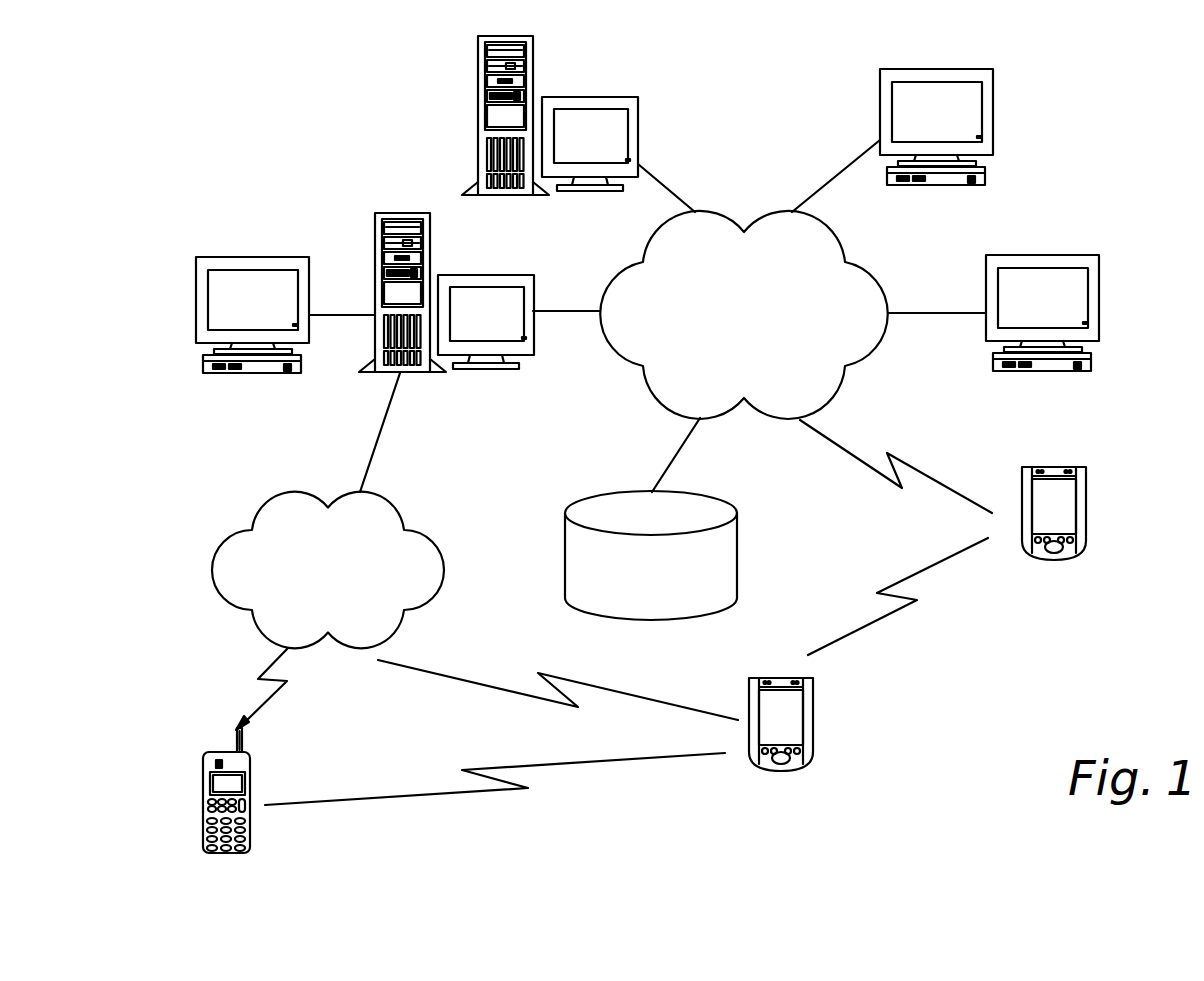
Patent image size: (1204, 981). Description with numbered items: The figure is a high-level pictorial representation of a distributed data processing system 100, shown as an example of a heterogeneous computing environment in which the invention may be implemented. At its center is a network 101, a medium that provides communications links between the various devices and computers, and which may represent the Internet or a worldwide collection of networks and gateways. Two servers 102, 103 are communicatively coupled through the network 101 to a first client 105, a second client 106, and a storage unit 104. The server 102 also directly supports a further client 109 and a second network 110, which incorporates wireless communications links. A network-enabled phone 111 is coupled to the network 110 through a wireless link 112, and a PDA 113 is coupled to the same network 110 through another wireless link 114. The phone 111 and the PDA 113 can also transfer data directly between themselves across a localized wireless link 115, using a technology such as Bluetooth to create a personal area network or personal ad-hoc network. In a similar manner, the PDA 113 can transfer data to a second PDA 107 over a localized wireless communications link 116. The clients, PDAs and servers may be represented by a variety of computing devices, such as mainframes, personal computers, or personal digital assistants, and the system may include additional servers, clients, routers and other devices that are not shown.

The distributed data processing system 100 is at (260, 102).
The network 101 is at (770, 342).
The server 102 is at (405, 213).
The server 103 is at (478, 130).
The storage unit 104 is at (565, 558).
The client 105 is at (993, 117).
The client 106 is at (1099, 305).
The PDA 107 is at (1085, 510).
The client 109 is at (252, 257).
The network 110 is at (353, 600).
The network-enabled phone 111 is at (250, 815).
The wireless link 112 is at (270, 705).
The PDA 113 is at (813, 722).
The wireless link 114 is at (478, 682).
The localized wireless link 115 is at (407, 793).
The localized wireless communications link 116 is at (858, 630).